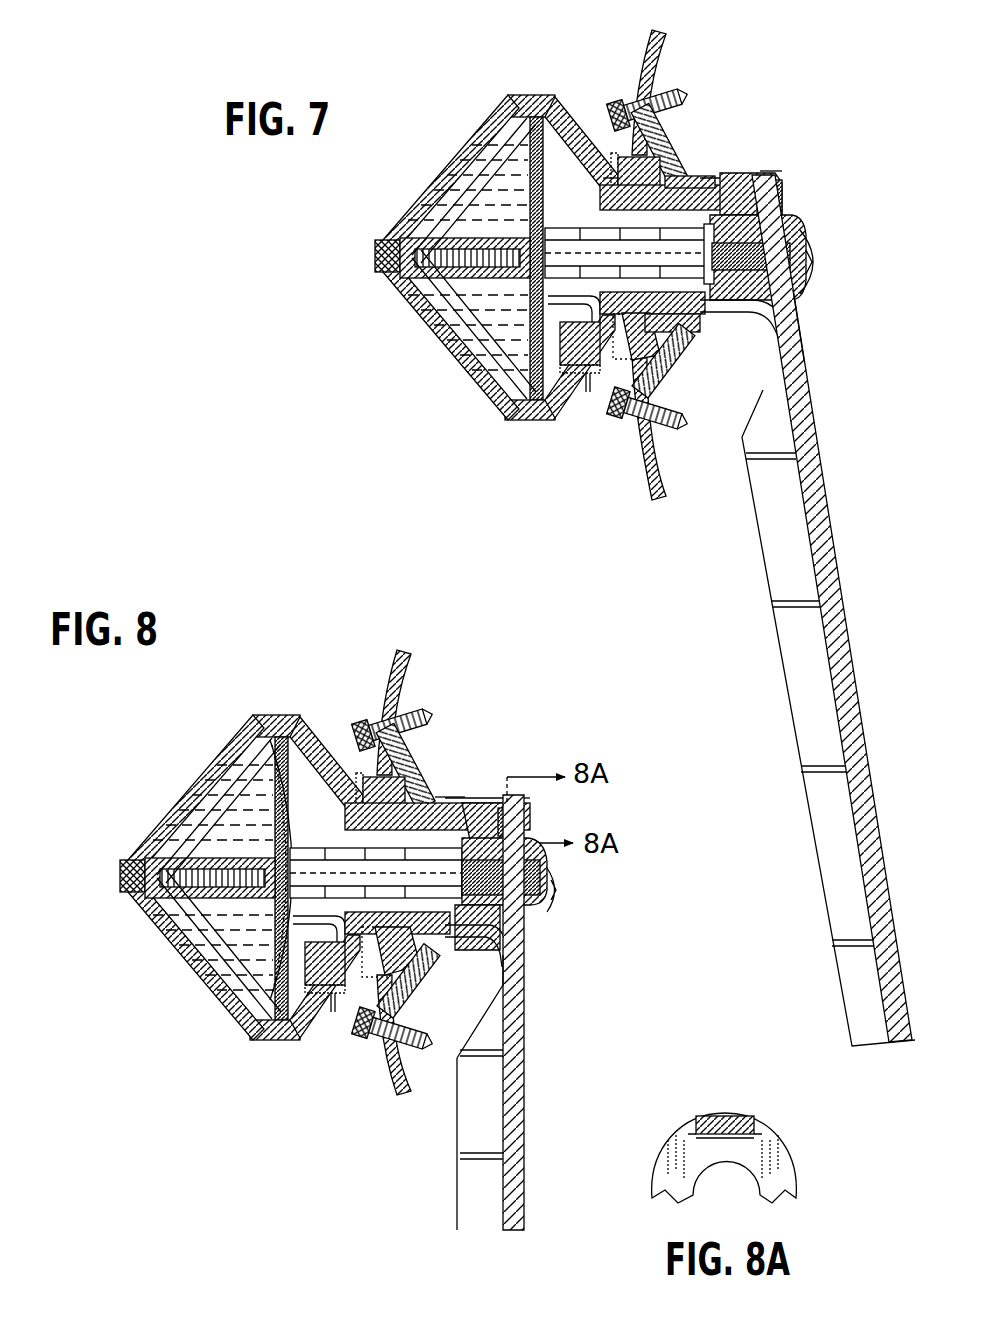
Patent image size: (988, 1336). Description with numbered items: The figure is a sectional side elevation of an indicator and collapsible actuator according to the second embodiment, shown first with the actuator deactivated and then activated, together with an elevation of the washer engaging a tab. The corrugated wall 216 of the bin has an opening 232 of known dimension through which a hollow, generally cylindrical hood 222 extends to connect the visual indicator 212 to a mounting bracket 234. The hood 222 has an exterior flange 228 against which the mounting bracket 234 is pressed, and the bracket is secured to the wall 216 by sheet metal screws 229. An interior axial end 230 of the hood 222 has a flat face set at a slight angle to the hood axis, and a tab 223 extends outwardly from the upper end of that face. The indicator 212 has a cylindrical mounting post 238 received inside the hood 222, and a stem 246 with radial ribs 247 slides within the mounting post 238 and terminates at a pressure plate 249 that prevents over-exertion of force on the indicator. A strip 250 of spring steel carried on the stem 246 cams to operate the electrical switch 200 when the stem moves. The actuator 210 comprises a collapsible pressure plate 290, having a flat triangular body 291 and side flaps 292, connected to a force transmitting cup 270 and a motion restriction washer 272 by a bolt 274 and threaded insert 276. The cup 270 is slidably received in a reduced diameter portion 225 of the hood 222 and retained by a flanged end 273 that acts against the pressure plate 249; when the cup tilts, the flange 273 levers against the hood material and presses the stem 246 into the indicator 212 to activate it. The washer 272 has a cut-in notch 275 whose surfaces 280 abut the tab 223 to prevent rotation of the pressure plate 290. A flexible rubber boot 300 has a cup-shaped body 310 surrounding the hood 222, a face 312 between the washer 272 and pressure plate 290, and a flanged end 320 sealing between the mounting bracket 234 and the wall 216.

In FIG. 7, the actuator 210 is at (752, 189).
In FIG. 7, the visual indicator 212 is at (529, 267).
In FIG. 8, the visual indicator 212 is at (287, 876).
In FIG. 7, the wall 216 is at (641, 42).
In FIG. 8, the wall 216 is at (392, 650).
In FIG. 7, the hood 222 is at (722, 184).
In FIG. 8, the hood 222 is at (468, 793).
In FIG. 7, the tab 223 is at (787, 196).
In FIG. 8, the tab 223 is at (531, 804).
In FIG. 8A, the tab 223 is at (716, 1118).
In FIG. 7, the reduced diameter portion 225 is at (772, 180).
In FIG. 8, the reduced diameter portion 225 is at (554, 872).
In FIG. 7, the exterior flange 228 is at (610, 160).
In FIG. 8, the exterior flange 228 is at (368, 775).
In FIG. 7, the sheet metal screws 229 is at (688, 90).
In FIG. 7, the interior axial end 230 is at (806, 360).
In FIG. 7, the opening 232 is at (692, 180).
In FIG. 7, the mounting bracket 234 is at (612, 183).
In FIG. 7, the mounting post 238 is at (675, 145).
In FIG. 8, the mounting post 238 is at (433, 797).
In FIG. 7, the stem 246 is at (502, 152).
In FIG. 8, the stem 246 is at (262, 780).
In FIG. 7, the radial ribs 247 is at (578, 230).
In FIG. 8, the radial ribs 247 is at (376, 873).
In FIG. 7, the pressure plate 249 is at (710, 338).
In FIG. 8, the pressure plate 249 is at (446, 977).
In FIG. 7, the strip 250 is at (556, 305).
In FIG. 8, the strip 250 is at (292, 938).
In FIG. 7, the force transmitting cup 270 is at (798, 295).
In FIG. 8, the force transmitting cup 270 is at (524, 934).
In FIG. 7, the motion restriction washer 272 is at (796, 225).
In FIG. 8, the motion restriction washer 272 is at (535, 822).
In FIG. 8A, the motion restriction washer 272 is at (790, 1150).
In FIG. 7, the flanged end 273 is at (732, 184).
In FIG. 8, the flanged end 273 is at (505, 793).
In FIG. 7, the bolt 274 is at (816, 270).
In FIG. 8, the bolt 274 is at (550, 907).
In FIG. 8A, the notch 275 is at (732, 1112).
In FIG. 7, the threaded insert 276 is at (732, 326).
In FIG. 8, the threaded insert 276 is at (460, 957).
In FIG. 8A, the surfaces 280 is at (698, 1114).
In FIG. 7, the pressure plate 290 is at (816, 556).
In FIG. 8, the pressure plate 290 is at (527, 1047).
In FIG. 7, the body 291 is at (800, 328).
In FIG. 7, the side flap 292 is at (758, 553).
In FIG. 7, the boot 300 is at (772, 170).
In FIG. 8, the boot 300 is at (524, 788).
In FIG. 8, the cup-shaped body 310 is at (449, 794).
In FIG. 8, the face 312 is at (524, 957).
In FIG. 8, the flanged end 320 is at (415, 718).
In FIG. 7, the electrical switch 200 is at (567, 343).
In FIG. 8, the electrical switch 200 is at (305, 966).